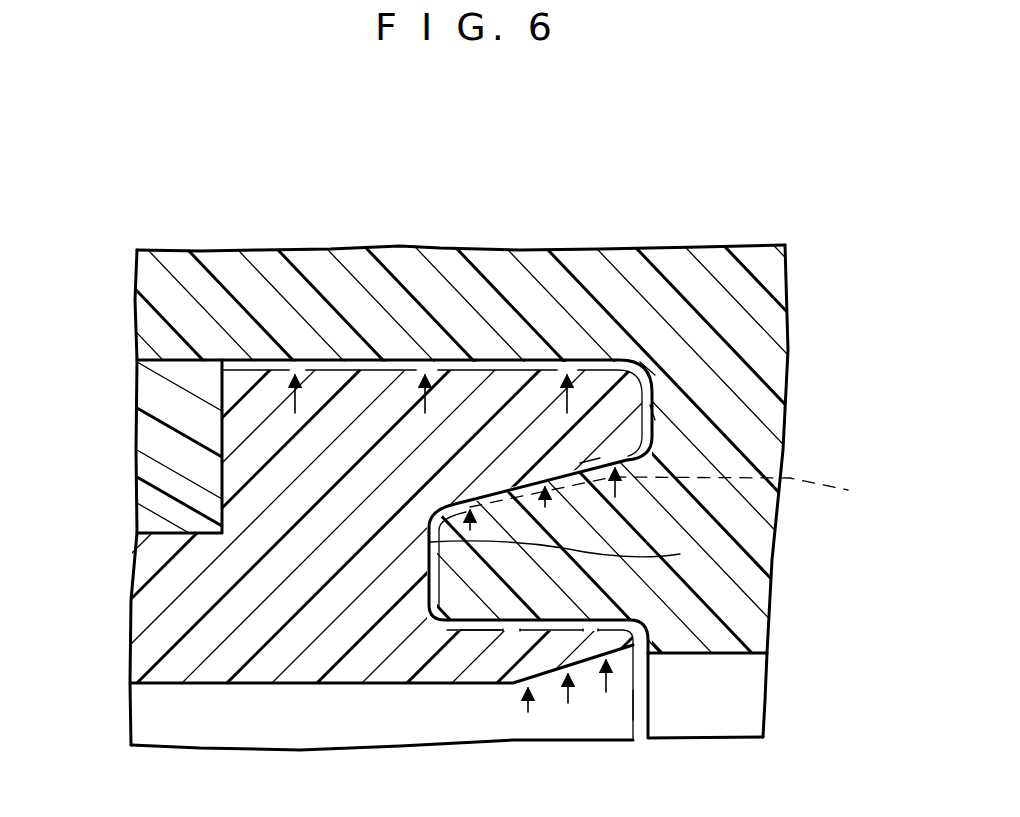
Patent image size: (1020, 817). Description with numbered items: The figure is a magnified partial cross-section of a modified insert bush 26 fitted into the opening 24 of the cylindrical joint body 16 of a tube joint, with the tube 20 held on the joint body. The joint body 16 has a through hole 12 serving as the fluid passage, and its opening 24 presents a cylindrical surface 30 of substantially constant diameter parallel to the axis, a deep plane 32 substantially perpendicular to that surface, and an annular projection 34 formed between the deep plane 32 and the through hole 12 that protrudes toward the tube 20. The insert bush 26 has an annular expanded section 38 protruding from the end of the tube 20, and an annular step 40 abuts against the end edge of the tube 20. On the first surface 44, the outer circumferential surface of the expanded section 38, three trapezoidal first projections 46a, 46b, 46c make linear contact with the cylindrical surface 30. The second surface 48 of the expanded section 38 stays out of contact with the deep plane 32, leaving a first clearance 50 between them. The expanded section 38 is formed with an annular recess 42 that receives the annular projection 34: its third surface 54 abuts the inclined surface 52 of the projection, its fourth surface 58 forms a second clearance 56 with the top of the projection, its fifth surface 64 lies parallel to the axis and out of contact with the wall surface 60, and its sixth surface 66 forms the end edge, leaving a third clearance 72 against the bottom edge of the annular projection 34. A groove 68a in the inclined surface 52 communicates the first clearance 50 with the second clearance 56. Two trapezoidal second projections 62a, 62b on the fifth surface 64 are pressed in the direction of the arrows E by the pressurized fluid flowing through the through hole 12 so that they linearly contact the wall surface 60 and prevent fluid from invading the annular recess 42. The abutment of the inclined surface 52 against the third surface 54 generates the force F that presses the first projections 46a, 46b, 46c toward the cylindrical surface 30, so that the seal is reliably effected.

The through hole 12 is at (262, 712).
The joint body 16 is at (757, 445).
The tube 20 is at (173, 440).
The opening 24 is at (205, 366).
The insert bush 26 is at (197, 686).
The cylindrical surface 30 is at (525, 367).
The deep plane 32 is at (657, 410).
The annular projection 34 is at (650, 632).
The expanded section 38 is at (343, 577).
The annular step 40 is at (213, 500).
The annular recess 42 is at (445, 617).
The first surface 44 is at (353, 372).
The first projection 46a is at (298, 372).
The first projection 46b is at (435, 373).
The first projection 46c is at (585, 373).
The second surface 48 is at (663, 413).
The first clearance 50 is at (657, 383).
The inclined surface 52 is at (580, 463).
The third surface 54 is at (680, 554).
The second clearance 56 is at (380, 610).
The fourth surface 58 is at (487, 570).
The wall surface 60 is at (565, 650).
The second projection 62a is at (522, 632).
The second projection 62b is at (597, 634).
The fifth surface 64 is at (478, 631).
The sixth surface 66 is at (657, 640).
The groove 68a is at (890, 509).
The third clearance 72 is at (640, 676).